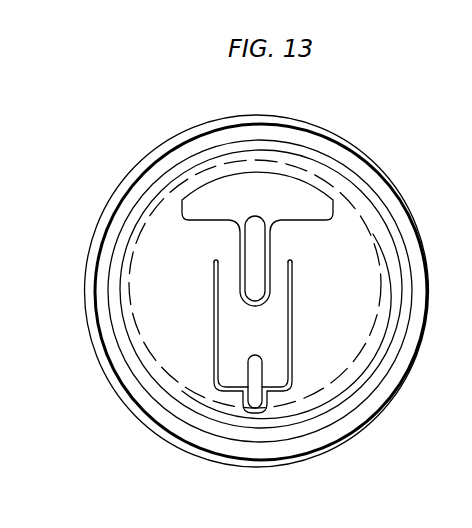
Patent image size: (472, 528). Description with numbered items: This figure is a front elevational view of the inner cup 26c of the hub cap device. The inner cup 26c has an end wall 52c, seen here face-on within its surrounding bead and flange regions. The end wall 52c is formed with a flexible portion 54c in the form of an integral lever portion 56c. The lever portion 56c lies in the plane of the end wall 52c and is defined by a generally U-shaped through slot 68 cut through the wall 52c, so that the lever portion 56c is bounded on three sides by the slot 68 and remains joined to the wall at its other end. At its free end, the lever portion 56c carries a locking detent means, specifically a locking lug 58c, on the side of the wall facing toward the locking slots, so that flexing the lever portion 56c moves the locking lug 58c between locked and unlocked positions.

The inner cup 26c is at (95, 203).
The end wall 52c is at (352, 301).
The flexible portion 54c is at (168, 292).
The lever portion 56c is at (276, 328).
The locking lug 58c is at (253, 373).
The U-shaped through slot 68 is at (291, 367).